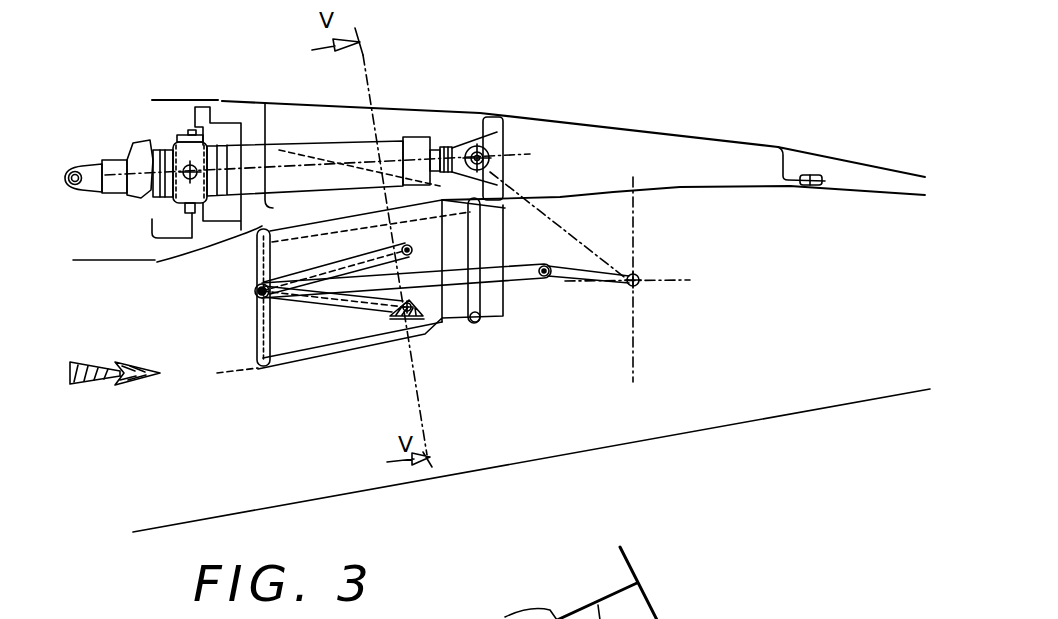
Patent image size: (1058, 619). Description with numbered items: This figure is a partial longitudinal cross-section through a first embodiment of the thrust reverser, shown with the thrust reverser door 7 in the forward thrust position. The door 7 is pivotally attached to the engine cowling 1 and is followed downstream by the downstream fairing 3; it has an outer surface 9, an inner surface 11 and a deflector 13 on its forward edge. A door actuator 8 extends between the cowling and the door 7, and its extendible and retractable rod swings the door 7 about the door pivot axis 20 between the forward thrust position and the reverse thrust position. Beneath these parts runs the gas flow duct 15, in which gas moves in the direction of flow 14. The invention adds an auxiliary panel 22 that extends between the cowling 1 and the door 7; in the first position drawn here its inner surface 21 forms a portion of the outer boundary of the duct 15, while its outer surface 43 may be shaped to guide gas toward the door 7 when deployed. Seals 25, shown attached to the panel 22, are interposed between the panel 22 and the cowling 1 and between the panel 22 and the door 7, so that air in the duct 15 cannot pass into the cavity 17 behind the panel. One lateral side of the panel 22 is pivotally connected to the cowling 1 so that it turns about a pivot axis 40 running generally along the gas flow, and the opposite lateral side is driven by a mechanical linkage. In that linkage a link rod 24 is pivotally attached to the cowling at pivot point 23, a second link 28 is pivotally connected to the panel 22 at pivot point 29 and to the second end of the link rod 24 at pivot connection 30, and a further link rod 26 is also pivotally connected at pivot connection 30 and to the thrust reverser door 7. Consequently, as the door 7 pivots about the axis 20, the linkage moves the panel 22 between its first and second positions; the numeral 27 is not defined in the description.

The engine cowling 1 is at (168, 100).
The downstream fairing 3 is at (877, 178).
The thrust reverser door 7 is at (662, 100).
The door actuator 8 is at (343, 157).
The outer surface 9 is at (747, 133).
The inner surface 11 is at (682, 183).
The deflector 13 is at (510, 608).
The direction of flow 14 is at (115, 392).
The gas flow duct 15 is at (836, 304).
The cavity 17 is at (287, 207).
The door pivot axis 20 is at (637, 273).
The inner surface 21 is at (262, 262).
The auxiliary panel 22 is at (300, 378).
The pivot point 23 is at (413, 251).
The link rod 24 is at (483, 224).
The seals 25 is at (260, 221).
The link rod 26 is at (514, 277).
The crank link 27 is at (550, 277).
The second link 28 is at (320, 349).
The pivot point 29 is at (428, 322).
The pivot connection 30 is at (259, 293).
The pivot axis 40 is at (217, 373).
The outer surface 43 is at (357, 222).